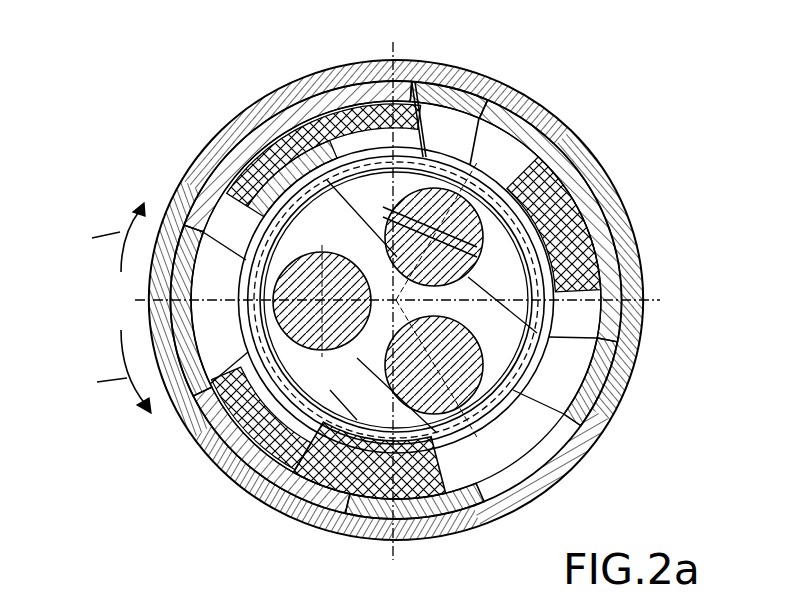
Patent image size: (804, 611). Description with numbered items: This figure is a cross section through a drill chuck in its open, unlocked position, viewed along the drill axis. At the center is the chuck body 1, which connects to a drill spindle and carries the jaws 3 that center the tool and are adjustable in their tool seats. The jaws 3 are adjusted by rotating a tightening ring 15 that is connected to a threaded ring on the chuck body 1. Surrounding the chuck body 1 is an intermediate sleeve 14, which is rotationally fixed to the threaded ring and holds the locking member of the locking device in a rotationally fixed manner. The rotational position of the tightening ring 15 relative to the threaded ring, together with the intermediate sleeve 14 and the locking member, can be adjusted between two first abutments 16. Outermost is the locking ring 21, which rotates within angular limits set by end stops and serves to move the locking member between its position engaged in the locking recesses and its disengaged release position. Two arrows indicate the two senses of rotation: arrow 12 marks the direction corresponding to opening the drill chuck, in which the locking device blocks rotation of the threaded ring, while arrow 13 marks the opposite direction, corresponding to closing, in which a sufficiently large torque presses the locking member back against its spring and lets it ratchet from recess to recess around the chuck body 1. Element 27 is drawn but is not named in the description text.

The chuck body 1 is at (513, 277).
The jaws 3 is at (495, 185).
The arrow 12 is at (100, 237).
The arrow 13 is at (105, 371).
The intermediate sleeve 14 is at (282, 257).
The tightening ring 15 is at (200, 237).
The first abutments 16 is at (422, 155).
The locking ring 21 is at (613, 367).
The intermediate ring 27 is at (425, 185).